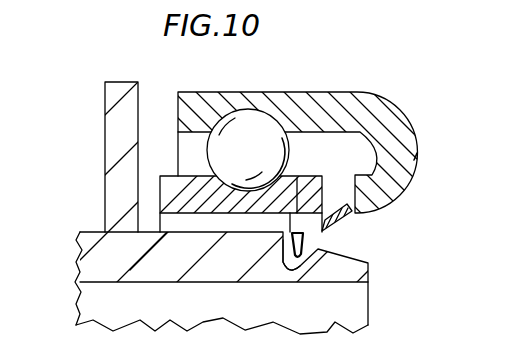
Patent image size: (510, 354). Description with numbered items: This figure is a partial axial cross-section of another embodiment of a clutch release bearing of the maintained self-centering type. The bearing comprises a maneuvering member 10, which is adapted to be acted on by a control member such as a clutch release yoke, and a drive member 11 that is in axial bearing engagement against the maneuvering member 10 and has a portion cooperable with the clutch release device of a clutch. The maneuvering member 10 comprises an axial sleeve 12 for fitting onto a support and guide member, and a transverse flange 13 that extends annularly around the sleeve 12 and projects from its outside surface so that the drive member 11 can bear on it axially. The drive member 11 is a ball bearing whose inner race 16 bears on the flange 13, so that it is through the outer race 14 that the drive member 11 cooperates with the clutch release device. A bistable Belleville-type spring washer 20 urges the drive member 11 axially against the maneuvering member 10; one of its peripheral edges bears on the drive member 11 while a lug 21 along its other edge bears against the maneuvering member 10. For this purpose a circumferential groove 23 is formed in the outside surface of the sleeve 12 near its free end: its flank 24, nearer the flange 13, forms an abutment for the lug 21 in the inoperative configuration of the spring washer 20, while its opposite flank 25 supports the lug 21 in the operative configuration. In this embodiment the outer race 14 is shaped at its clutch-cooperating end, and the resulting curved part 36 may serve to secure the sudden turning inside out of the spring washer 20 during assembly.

The maneuvering member 10 is at (390, 257).
The drive member 11 is at (412, 111).
The axial sleeve 12 is at (85, 260).
The transverse flange 13 is at (105, 129).
The outer race 14 is at (283, 105).
The inner race 16 is at (256, 232).
The spring washer 20 is at (355, 216).
The lug 21 is at (298, 179).
The circumferential groove 23 is at (322, 206).
The flank 24 is at (283, 266).
The flank 25 is at (303, 262).
The curved part 36 is at (413, 158).